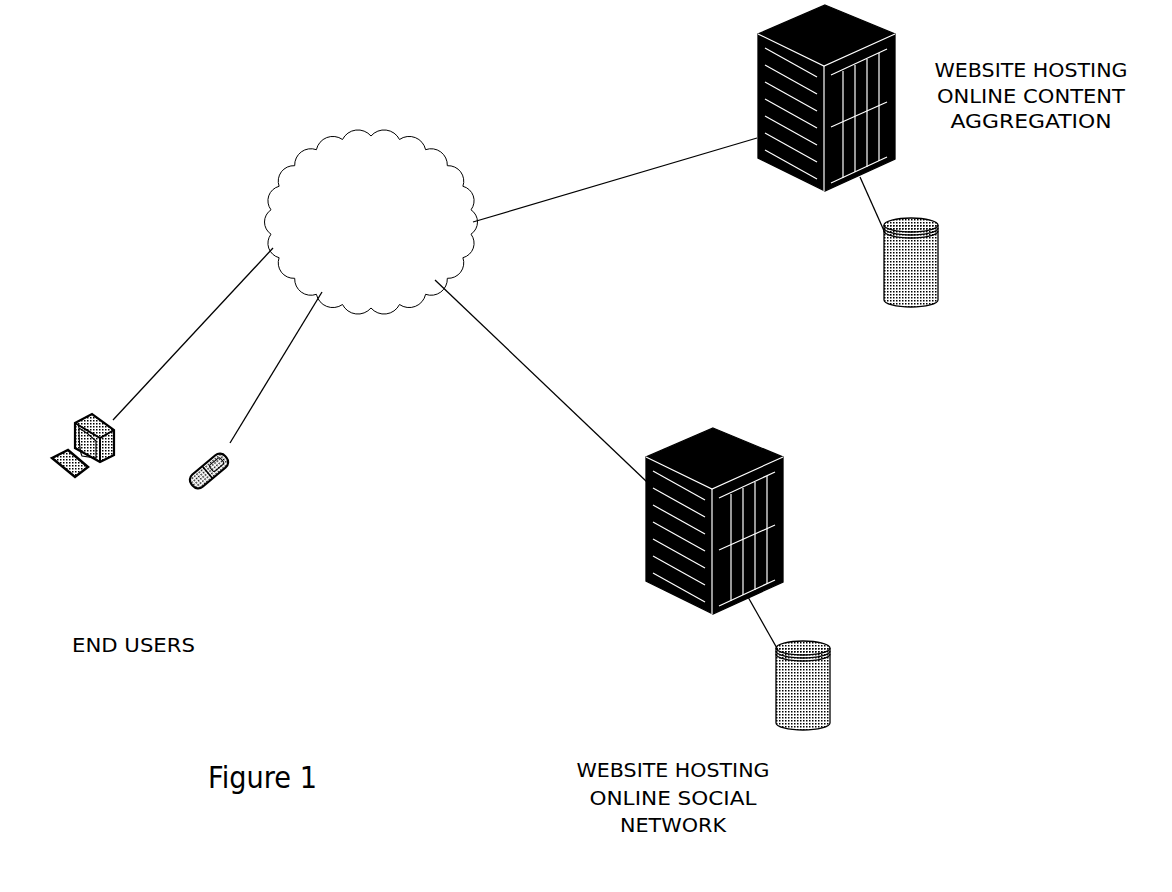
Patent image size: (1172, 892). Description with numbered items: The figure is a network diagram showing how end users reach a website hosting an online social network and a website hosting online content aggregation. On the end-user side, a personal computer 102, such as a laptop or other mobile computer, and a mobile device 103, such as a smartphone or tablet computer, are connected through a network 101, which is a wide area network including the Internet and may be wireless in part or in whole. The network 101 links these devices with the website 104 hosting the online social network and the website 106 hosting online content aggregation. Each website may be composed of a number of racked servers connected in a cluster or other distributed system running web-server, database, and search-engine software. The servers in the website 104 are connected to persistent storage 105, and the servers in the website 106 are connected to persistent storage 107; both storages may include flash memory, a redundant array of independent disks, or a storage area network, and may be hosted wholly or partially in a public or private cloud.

The network 101 is at (455, 178).
The personal computer 102 is at (98, 463).
The mobile device 103 is at (215, 490).
The website hosting an online social network 104 is at (692, 602).
The persistent storage 105 is at (805, 722).
The website hosting online content aggregation 106 is at (792, 175).
The persistent storage 107 is at (912, 300).